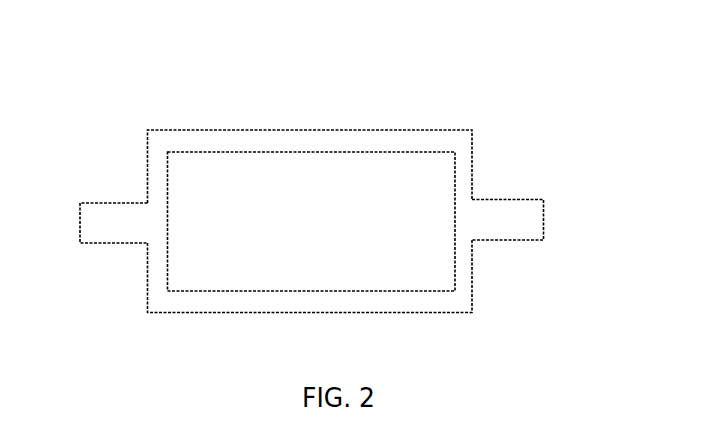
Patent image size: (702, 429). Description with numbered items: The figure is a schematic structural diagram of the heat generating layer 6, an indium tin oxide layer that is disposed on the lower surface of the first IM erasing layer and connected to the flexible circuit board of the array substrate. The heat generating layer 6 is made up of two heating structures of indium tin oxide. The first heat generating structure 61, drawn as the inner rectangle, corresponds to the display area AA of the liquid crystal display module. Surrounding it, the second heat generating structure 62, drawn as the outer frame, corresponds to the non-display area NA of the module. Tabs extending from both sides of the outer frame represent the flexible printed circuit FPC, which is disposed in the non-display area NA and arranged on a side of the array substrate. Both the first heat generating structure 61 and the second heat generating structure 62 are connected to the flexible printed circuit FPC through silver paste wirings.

The heat generating layer 6 is at (143, 49).
The first heat generating structure 61 is at (198, 176).
The second heat generating structure 62 is at (473, 133).
The flexible printed circuit FPC is at (110, 240).
The display area AA is at (256, 273).
The non-display area NA is at (328, 300).